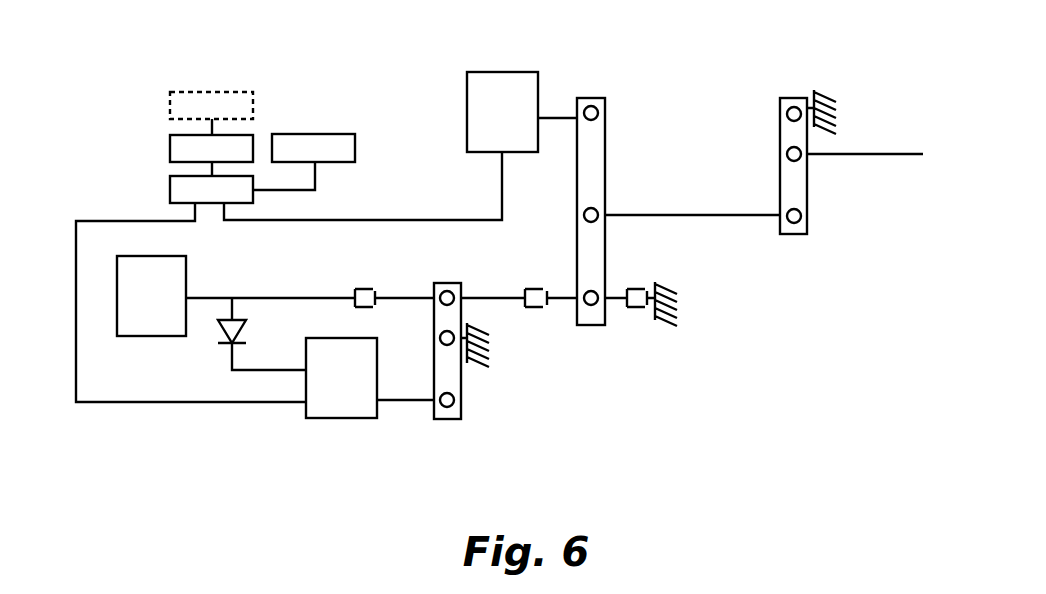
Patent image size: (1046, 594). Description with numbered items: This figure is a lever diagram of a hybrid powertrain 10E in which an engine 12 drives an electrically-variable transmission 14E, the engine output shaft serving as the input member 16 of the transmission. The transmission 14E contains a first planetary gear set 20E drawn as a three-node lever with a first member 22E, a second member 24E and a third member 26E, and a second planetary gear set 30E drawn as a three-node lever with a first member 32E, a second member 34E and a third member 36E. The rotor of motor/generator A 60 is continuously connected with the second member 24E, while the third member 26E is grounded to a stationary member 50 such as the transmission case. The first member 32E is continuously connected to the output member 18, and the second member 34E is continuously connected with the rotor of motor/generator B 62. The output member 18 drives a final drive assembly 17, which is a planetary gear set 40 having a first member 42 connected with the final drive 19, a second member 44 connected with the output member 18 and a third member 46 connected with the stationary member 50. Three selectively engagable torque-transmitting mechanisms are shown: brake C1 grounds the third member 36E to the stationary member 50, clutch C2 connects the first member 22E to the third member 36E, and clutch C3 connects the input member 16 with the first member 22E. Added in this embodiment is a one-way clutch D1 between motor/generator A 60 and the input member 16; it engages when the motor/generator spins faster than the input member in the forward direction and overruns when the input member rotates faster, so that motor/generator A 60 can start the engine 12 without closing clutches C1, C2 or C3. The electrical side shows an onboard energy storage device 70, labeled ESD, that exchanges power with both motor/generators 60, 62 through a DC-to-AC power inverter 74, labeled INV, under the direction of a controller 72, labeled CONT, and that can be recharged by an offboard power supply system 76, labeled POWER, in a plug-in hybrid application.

The powertrain 10E is at (874, 106).
The engine 12 is at (151, 296).
The transmission 14E is at (380, 112).
The input member 16 is at (268, 297).
The final drive assembly 17 is at (763, 114).
The output member 18 is at (723, 217).
The final drive 19 is at (888, 155).
The first planetary gear set 20E is at (461, 405).
The first member 22E is at (447, 291).
The second member 24E is at (447, 407).
The third member 26E is at (440, 338).
The second planetary gear set 30E is at (605, 133).
The first member 32E is at (598, 211).
The second member 34E is at (591, 106).
The third member 36E is at (591, 305).
The planetary gear set 40 is at (780, 138).
The first member 42 is at (801, 154).
The second member 44 is at (801, 216).
The third member 46 is at (794, 107).
The stationary member 50 is at (825, 92).
The motor/generator 60 is at (337, 420).
The motor/generator 62 is at (467, 118).
The energy storage device 70 is at (170, 148).
The controller 72 is at (313, 134).
The power inverter 74 is at (170, 190).
The offboard power supply system 76 is at (193, 92).
The brake C1 is at (647, 277).
The clutch C2 is at (540, 273).
The clutch C3 is at (362, 276).
The one-way clutch D1 is at (262, 330).